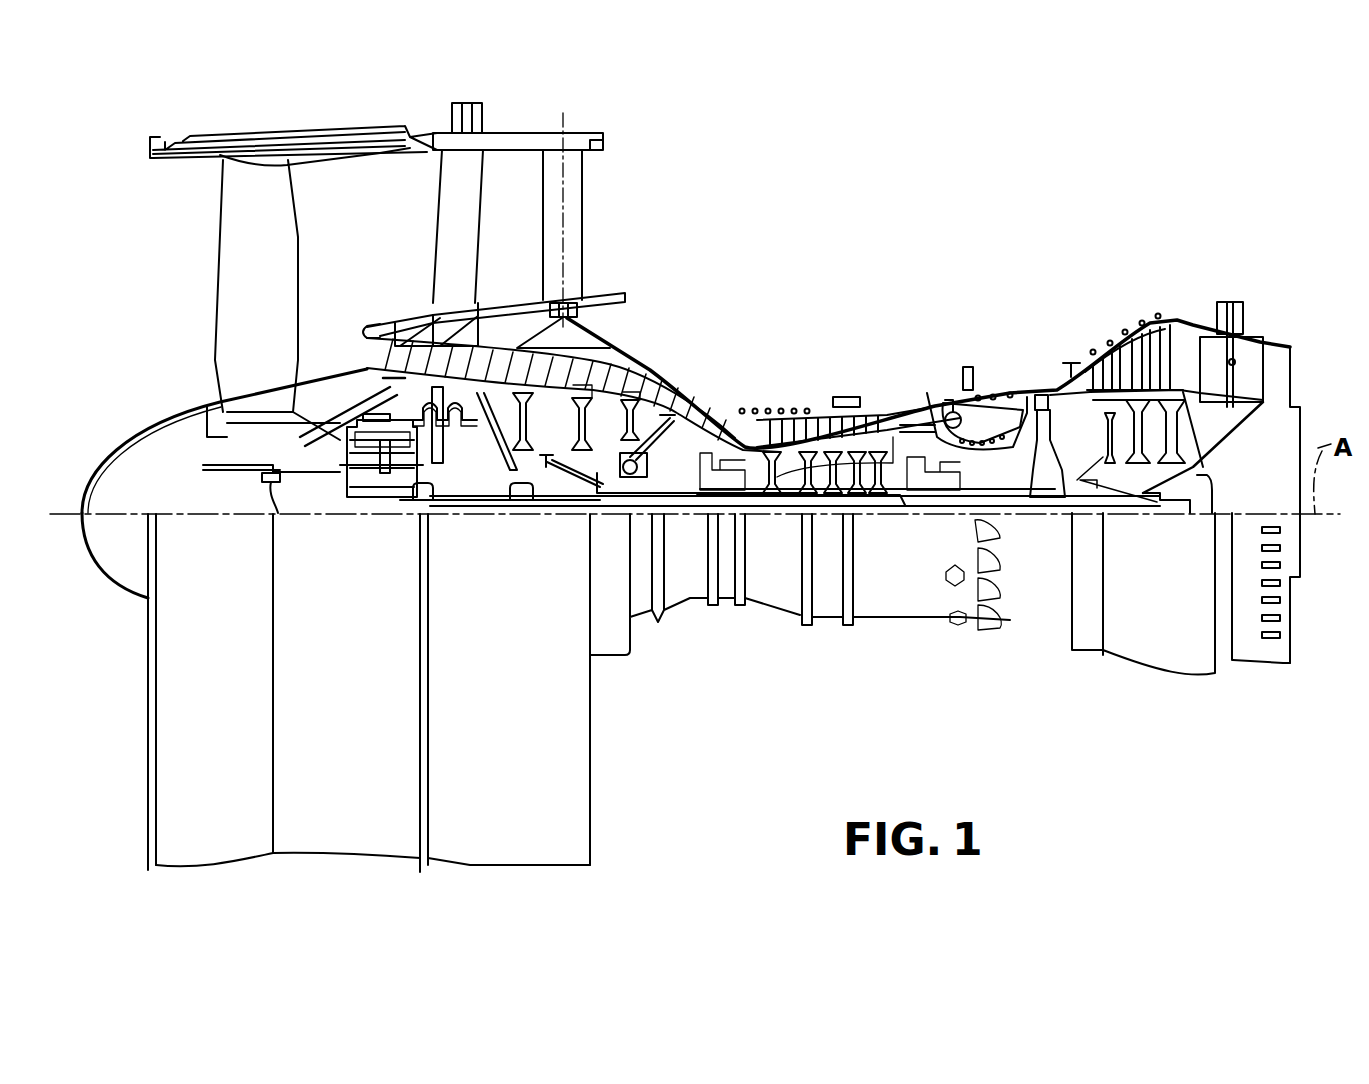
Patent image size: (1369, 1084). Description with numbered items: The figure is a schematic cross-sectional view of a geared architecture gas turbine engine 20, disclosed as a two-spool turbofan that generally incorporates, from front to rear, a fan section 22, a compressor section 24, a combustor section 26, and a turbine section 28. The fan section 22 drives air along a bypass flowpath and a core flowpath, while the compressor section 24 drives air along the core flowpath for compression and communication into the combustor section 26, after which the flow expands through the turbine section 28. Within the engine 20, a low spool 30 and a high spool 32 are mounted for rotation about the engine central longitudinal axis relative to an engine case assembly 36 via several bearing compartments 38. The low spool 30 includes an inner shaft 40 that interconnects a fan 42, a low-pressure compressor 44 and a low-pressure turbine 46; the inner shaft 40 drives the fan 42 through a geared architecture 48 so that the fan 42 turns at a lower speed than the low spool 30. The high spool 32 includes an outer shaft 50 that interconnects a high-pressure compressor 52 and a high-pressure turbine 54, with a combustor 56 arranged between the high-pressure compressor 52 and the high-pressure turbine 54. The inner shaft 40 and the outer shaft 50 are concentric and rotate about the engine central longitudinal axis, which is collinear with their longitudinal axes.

The gas turbine engine 20 is at (1043, 197).
The fan section 22 is at (148, 113).
The compressor section 24 is at (865, 265).
The combustor section 26 is at (980, 265).
The turbine section 28 is at (980, 265).
The low spool 30 is at (678, 467).
The high spool 32 is at (883, 468).
The engine case assembly 36 is at (829, 625).
The bearing compartments 38 is at (456, 586).
The inner shaft 40 is at (1015, 505).
The fan 42 is at (243, 305).
The low-pressure compressor 44 is at (620, 368).
The low-pressure turbine 46 is at (1150, 350).
The geared architecture 48 is at (382, 468).
The outer shaft 50 is at (1022, 500).
The high-pressure compressor 52 is at (757, 432).
The high-pressure turbine 54 is at (1057, 424).
The combustor 56 is at (985, 426).